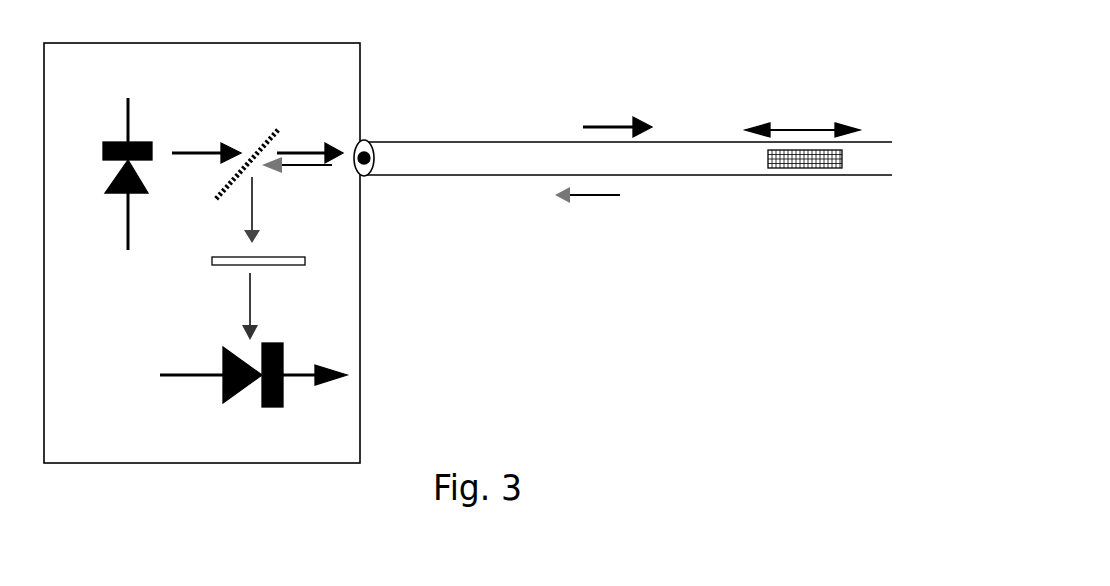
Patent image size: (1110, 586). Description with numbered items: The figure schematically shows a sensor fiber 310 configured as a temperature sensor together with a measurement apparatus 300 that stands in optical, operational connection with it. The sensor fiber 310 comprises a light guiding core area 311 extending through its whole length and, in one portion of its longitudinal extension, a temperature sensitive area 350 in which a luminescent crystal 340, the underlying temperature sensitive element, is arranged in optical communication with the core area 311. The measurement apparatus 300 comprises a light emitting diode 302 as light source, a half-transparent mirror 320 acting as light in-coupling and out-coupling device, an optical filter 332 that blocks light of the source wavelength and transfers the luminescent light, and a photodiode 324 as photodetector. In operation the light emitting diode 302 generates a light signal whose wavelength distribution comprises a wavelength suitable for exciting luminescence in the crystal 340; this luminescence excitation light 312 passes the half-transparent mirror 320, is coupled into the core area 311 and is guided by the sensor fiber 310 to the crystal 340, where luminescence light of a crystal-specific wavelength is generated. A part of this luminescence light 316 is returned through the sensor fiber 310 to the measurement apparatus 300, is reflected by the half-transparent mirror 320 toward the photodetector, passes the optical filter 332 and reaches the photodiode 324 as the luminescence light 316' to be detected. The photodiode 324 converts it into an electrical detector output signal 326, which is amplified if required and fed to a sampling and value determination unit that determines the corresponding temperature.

The measurement apparatus 300 is at (111, 487).
The light emitting diode 302 is at (111, 224).
The sensor fiber 310 is at (477, 200).
The light guiding core area 311 is at (369, 153).
The luminescence excitation light 312 is at (220, 133).
The luminescence light 316 is at (460, 204).
The luminescence light to be detected 316' is at (247, 258).
The half-transparent mirror 320 is at (268, 130).
The photodiode 324 is at (200, 397).
The detector output signal 326 is at (315, 371).
The optical filter 332 is at (305, 261).
The luminescent crystal 340 is at (808, 170).
The temperature sensitive area 350 is at (802, 117).